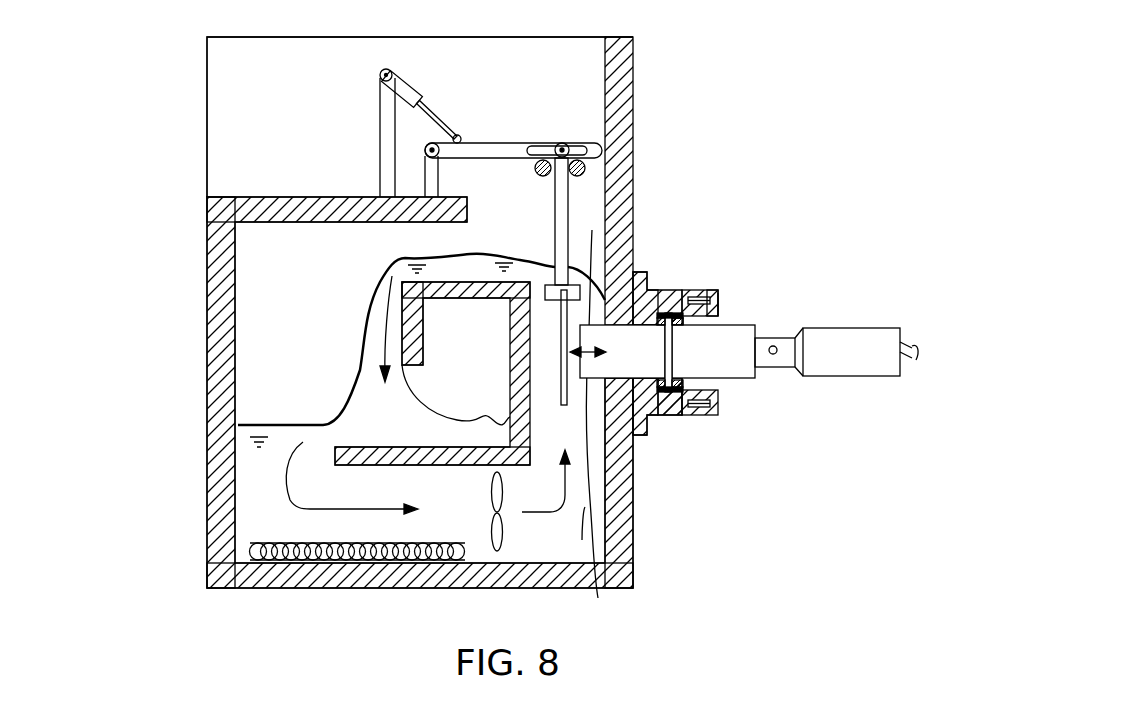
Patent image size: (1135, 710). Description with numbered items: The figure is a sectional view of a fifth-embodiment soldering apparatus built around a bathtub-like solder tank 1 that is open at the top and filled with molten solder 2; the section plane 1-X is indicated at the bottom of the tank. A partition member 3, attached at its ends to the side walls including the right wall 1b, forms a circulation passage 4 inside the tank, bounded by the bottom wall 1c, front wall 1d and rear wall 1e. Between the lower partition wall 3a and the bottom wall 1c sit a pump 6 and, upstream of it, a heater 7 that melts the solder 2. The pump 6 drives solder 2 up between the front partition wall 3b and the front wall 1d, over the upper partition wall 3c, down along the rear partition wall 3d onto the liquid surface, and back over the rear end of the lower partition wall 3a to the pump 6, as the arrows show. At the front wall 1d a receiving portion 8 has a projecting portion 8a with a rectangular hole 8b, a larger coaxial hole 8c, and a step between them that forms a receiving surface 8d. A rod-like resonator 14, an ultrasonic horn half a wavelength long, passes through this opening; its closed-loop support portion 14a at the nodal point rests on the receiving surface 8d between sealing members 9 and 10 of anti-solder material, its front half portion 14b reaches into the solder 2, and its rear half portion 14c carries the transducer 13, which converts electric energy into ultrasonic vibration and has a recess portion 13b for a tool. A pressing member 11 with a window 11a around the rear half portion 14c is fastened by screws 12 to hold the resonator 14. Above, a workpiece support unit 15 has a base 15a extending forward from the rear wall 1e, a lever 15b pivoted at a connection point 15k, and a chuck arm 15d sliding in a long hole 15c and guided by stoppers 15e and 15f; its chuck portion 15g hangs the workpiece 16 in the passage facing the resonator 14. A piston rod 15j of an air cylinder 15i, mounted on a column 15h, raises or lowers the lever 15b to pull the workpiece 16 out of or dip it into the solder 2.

The solder tank 1 is at (645, 44).
The right wall 1b is at (207, 66).
The bottom wall 1c is at (483, 560).
The front wall 1d is at (633, 510).
The rear wall 1e is at (207, 302).
The wall opening / section line 1-X is at (609, 428).
The molten solder 2 is at (262, 422).
The partition member 3 is at (472, 266).
The lower partition wall 3a is at (380, 467).
The front partition wall 3b is at (547, 466).
The upper partition wall 3c is at (467, 298).
The rear partition wall 3d is at (423, 350).
The circulation passage 4 is at (585, 507).
The pump 6 is at (505, 508).
The heater 7 is at (420, 542).
The receiving portion 8 is at (633, 508).
The projecting portion 8a is at (645, 290).
The hole 8b is at (658, 415).
The hole 8c is at (698, 415).
The receiving surface 8d is at (670, 415).
The sealing member 9 is at (690, 292).
The sealing member 10 is at (700, 297).
The pressing member 11 is at (712, 296).
The window 11a is at (718, 312).
The screw 12 is at (700, 318).
The transducer 13 is at (905, 345).
The recess portion 13b is at (775, 355).
The resonator 14 is at (745, 380).
The support portion 14a is at (672, 388).
The front half portion 14b is at (672, 310).
The rear half portion 14c is at (778, 338).
The workpiece support unit 15 is at (492, 130).
The base 15a is at (268, 196).
The lever 15b is at (515, 143).
The long hole 15c is at (570, 150).
The chuck arm 15d is at (568, 212).
The stopper 15e is at (535, 170).
The stopper 15f is at (582, 166).
The chuck portion 15g is at (578, 287).
The column 15h is at (380, 104).
The air cylinder 15i is at (415, 90).
The piston rod 15j is at (440, 125).
The connection point 15k is at (425, 150).
The workpiece 16 is at (510, 383).